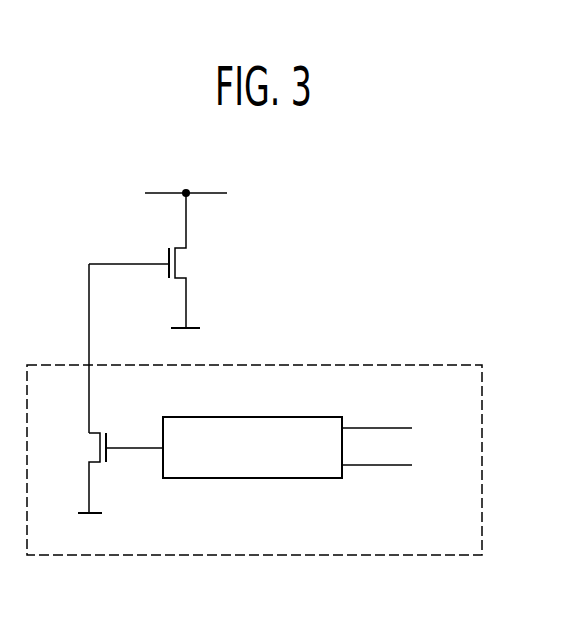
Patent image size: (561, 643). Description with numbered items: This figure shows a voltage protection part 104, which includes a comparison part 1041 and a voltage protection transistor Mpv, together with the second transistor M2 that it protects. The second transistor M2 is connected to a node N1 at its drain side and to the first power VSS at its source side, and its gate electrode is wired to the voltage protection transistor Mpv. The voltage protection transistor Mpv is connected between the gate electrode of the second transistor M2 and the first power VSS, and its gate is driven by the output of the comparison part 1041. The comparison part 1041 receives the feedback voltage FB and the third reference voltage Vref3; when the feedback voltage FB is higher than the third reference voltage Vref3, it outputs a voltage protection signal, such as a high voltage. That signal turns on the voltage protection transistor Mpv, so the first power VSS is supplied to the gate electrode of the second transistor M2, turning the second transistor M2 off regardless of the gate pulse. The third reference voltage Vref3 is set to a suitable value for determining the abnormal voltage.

The voltage protection part 104 is at (415, 365).
The comparison part 1041 is at (298, 417).
The second transistor M2 is at (151, 260).
The voltage protection transistor Mpv is at (108, 473).
The node N1 is at (186, 181).
The first power VSS is at (186, 343).
The feedback voltage FB is at (390, 428).
The third reference voltage Vref3 is at (402, 467).